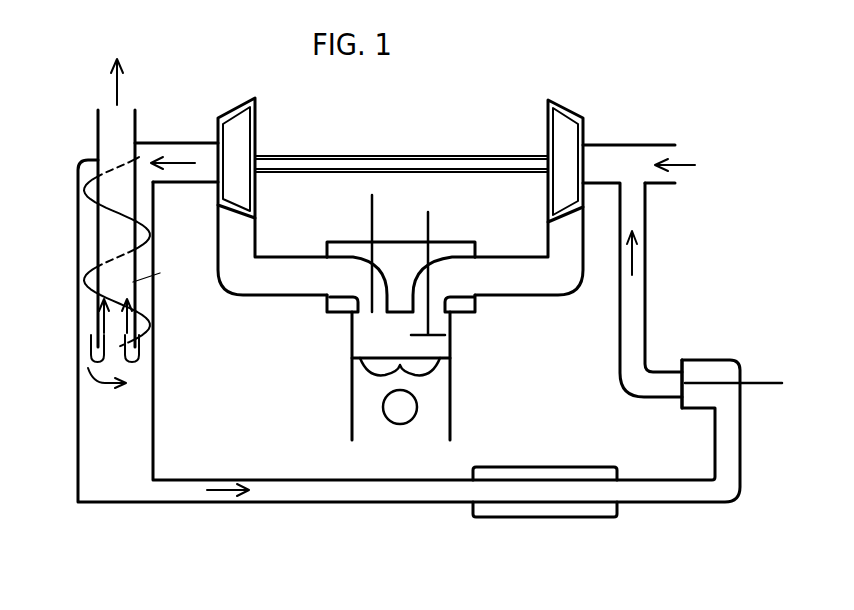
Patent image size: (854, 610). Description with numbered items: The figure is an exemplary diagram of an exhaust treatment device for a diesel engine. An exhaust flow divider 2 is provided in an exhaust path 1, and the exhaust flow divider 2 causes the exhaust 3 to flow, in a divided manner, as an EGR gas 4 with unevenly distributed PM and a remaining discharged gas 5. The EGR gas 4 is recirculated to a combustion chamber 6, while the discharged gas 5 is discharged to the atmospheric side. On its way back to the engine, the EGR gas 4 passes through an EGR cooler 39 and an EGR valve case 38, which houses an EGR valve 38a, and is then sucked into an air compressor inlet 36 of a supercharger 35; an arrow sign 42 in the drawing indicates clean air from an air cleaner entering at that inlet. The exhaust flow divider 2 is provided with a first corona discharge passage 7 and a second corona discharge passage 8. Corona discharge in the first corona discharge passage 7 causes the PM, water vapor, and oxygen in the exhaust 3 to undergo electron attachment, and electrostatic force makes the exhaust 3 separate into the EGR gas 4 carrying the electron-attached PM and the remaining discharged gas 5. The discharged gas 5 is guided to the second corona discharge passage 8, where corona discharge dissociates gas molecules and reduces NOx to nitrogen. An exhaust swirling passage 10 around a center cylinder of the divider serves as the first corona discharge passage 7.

The exhaust path 1 is at (164, 133).
The exhaust flow divider 2 is at (68, 257).
The exhaust 3 is at (178, 165).
The EGR gas 4 is at (87, 371).
The discharged gas 5 is at (116, 96).
The combustion chamber 6 is at (430, 345).
The first corona discharge passage 7 is at (187, 304).
The exhaust swirling passage 10 is at (147, 285).
The second corona discharge passage 8 is at (113, 190).
The supercharger 35 is at (423, 147).
The air compressor inlet 36 is at (628, 160).
The EGR valve case 38 is at (742, 397).
The EGR valve 38a is at (707, 378).
The EGR cooler 39 is at (553, 510).
The arrow sign 42 is at (683, 160).